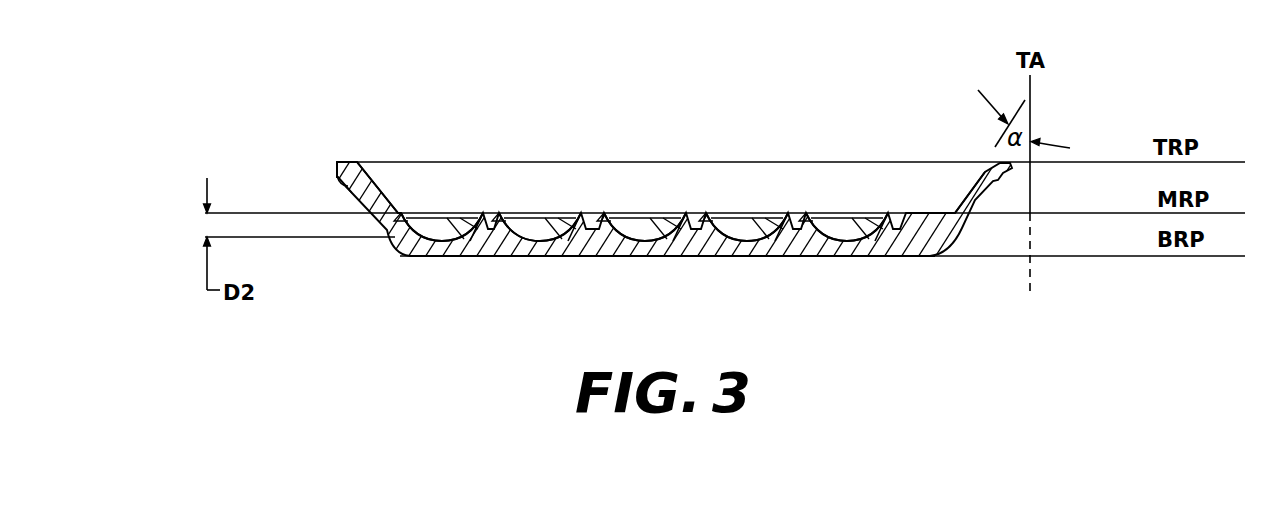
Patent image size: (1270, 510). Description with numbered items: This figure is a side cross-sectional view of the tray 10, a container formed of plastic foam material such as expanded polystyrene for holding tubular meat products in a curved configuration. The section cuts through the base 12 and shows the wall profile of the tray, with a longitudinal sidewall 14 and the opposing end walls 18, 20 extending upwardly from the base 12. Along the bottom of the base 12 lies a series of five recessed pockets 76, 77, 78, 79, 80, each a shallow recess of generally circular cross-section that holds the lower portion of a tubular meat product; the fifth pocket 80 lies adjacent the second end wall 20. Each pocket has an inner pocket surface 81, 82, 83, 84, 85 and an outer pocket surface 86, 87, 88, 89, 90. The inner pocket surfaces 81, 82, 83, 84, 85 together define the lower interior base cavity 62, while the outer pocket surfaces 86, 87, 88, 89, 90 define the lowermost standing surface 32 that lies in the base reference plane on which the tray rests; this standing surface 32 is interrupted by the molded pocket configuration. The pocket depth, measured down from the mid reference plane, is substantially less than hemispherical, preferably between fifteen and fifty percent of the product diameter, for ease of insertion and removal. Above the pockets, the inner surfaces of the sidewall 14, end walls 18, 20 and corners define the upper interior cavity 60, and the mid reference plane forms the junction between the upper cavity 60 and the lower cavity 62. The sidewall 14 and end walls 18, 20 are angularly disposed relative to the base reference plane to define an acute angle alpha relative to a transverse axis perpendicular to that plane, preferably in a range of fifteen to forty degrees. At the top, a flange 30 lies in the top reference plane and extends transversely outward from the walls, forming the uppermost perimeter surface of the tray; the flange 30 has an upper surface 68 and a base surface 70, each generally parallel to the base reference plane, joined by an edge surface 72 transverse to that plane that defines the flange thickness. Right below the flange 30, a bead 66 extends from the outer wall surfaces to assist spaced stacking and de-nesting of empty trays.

The tray 10 is at (254, 71).
The base 12 is at (791, 260).
The longitudinal sidewall 14 is at (609, 175).
The end wall 18 is at (962, 193).
The end wall 20 is at (393, 180).
The top flange 30 is at (332, 156).
The standing surface 32 is at (915, 257).
The upper interior cavity 60 is at (503, 165).
The lower interior base cavity 62 is at (677, 233).
The bead 66 is at (350, 184).
The upper surface 68 is at (343, 161).
The base surface 70 is at (338, 183).
The edge surface 72 is at (338, 175).
The recessed pocket 76 is at (841, 226).
The recessed pocket 77 is at (748, 226).
The recessed pocket 78 is at (641, 230).
The recessed pocket 79 is at (534, 230).
The recessed pocket 80 is at (428, 230).
The inner pocket surface 81 is at (856, 226).
The inner pocket surface 82 is at (755, 235).
The inner pocket surface 83 is at (663, 233).
The inner pocket surface 84 is at (560, 233).
The inner pocket surface 85 is at (462, 233).
The outer pocket surface 86 is at (858, 258).
The outer pocket surface 87 is at (762, 258).
The outer pocket surface 88 is at (673, 258).
The outer pocket surface 89 is at (556, 258).
The outer pocket surface 90 is at (433, 258).